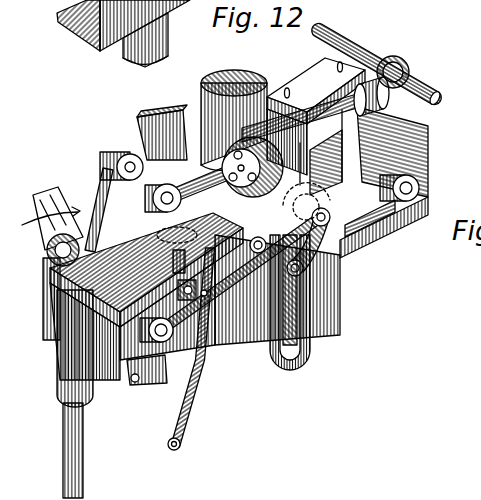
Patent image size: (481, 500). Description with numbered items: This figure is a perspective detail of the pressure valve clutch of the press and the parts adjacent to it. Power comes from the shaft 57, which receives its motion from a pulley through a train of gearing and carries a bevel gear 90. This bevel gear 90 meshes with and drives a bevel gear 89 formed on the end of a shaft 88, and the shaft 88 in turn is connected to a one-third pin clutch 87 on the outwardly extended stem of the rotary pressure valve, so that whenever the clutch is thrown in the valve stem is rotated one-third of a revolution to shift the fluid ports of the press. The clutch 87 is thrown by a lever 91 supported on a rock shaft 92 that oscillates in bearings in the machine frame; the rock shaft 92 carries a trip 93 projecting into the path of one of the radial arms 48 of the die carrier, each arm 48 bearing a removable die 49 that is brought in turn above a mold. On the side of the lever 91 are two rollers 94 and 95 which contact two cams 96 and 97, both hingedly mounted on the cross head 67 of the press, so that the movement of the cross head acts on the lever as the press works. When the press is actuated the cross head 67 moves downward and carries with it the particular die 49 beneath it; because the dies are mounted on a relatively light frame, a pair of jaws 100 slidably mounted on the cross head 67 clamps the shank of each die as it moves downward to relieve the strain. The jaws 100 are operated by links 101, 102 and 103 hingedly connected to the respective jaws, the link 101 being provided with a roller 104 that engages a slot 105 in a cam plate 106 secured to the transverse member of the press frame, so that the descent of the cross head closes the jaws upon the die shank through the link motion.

The radial arm 48 is at (50, 193).
The die 49 is at (70, 432).
The shaft 57 is at (413, 78).
The cross head 67 is at (427, 157).
The one-third pin clutch 87 is at (243, 148).
The shaft 88 is at (366, 116).
The bevel gear 89 is at (428, 108).
The bevel gear 90 is at (392, 63).
The lever 91 is at (192, 392).
The rock shaft 92 is at (158, 207).
The trip 93 is at (100, 207).
The roller 94 is at (187, 293).
The roller 95 is at (167, 441).
The cam 96 is at (173, 250).
The cam 97 is at (162, 378).
The jaw 100 is at (383, 212).
The link 101 is at (358, 228).
The link 102 is at (313, 265).
The link 103 is at (242, 308).
The roller 104 is at (318, 227).
The slot 105 is at (297, 337).
The cam plate 106 is at (300, 196).